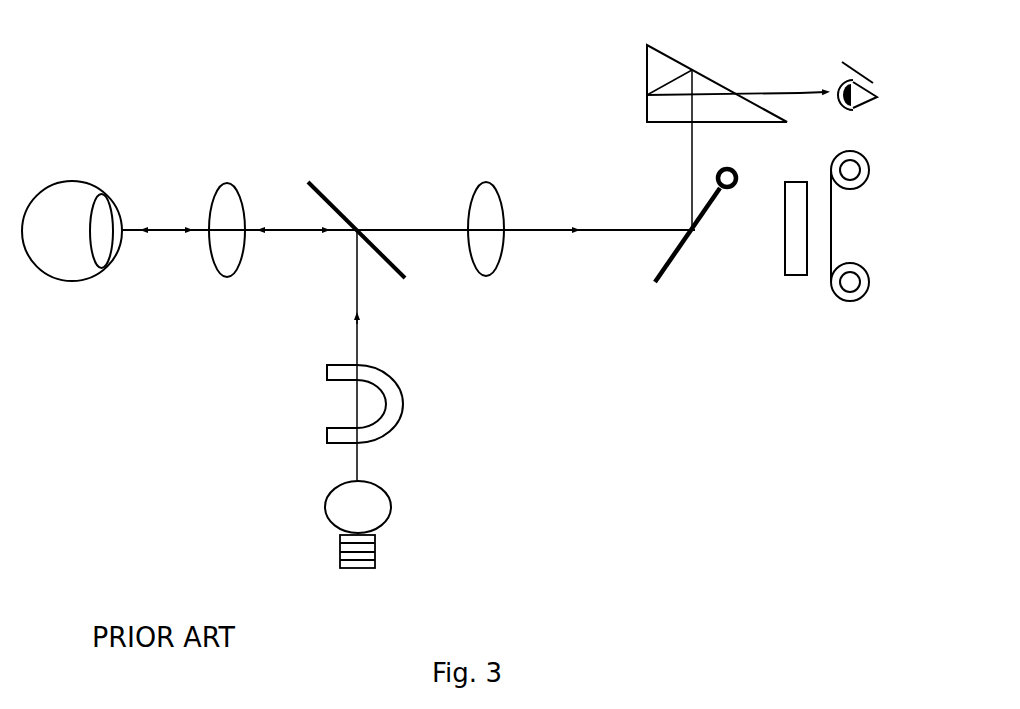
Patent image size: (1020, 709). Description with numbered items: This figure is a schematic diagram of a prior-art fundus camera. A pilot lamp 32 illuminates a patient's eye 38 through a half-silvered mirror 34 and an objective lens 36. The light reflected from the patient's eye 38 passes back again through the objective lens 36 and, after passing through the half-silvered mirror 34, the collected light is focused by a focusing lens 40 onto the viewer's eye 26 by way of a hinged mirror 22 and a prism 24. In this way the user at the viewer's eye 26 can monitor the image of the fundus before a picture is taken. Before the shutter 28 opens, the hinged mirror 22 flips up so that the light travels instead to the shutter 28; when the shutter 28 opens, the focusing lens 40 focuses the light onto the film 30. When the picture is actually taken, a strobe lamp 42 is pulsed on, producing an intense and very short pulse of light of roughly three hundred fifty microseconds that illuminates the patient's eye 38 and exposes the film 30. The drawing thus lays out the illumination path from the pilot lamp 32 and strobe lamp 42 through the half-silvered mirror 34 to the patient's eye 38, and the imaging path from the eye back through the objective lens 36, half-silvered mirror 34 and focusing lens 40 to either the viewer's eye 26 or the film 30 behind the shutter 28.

The hinged mirror 22 is at (680, 255).
The prism 24 is at (663, 53).
The viewer's eye 26 is at (870, 97).
The shutter 28 is at (799, 268).
The film 30 is at (833, 252).
The pilot lamp 32 is at (387, 517).
The half-silvered mirror 34 is at (323, 193).
The objective lens 36 is at (227, 182).
The patient's eye 38 is at (73, 185).
The focusing lens 40 is at (474, 200).
The strobe lamp 42 is at (393, 422).